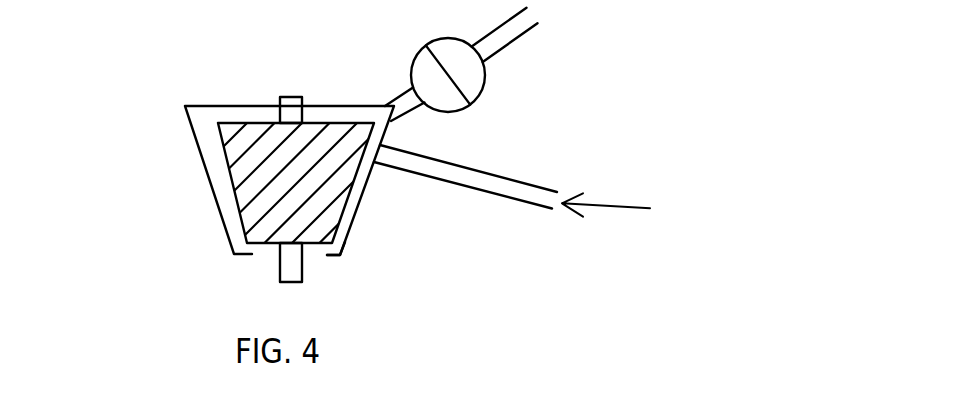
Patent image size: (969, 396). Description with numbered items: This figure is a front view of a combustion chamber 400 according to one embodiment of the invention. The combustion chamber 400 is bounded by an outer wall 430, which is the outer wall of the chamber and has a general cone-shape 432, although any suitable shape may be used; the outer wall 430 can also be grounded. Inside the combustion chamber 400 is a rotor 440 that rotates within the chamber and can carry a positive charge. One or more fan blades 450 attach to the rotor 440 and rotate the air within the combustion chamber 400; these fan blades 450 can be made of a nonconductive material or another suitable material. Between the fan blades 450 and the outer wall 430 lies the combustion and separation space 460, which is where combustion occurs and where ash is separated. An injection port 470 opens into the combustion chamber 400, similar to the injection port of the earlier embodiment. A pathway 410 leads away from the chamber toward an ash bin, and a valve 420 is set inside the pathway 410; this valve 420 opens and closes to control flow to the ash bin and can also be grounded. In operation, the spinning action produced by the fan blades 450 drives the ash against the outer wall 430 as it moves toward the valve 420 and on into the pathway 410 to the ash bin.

The combustion chamber 400 is at (93, 112).
The pathway 410 is at (497, 40).
The valve 420 is at (462, 92).
The outer wall 430 is at (368, 185).
The general cone-shape 432 is at (355, 225).
The rotor 440 is at (340, 121).
The fan blades 450 is at (258, 210).
The combustion and separation space 460 is at (200, 122).
The injection port 470 is at (629, 207).